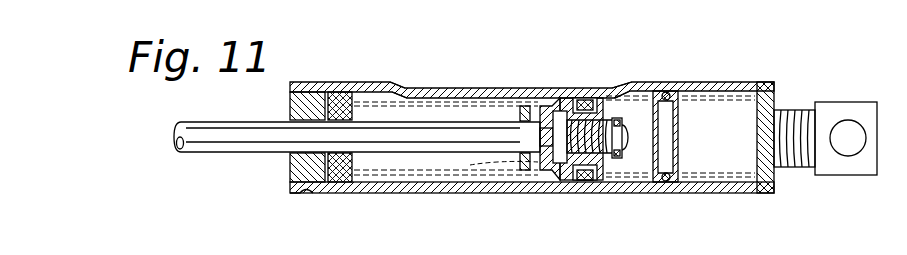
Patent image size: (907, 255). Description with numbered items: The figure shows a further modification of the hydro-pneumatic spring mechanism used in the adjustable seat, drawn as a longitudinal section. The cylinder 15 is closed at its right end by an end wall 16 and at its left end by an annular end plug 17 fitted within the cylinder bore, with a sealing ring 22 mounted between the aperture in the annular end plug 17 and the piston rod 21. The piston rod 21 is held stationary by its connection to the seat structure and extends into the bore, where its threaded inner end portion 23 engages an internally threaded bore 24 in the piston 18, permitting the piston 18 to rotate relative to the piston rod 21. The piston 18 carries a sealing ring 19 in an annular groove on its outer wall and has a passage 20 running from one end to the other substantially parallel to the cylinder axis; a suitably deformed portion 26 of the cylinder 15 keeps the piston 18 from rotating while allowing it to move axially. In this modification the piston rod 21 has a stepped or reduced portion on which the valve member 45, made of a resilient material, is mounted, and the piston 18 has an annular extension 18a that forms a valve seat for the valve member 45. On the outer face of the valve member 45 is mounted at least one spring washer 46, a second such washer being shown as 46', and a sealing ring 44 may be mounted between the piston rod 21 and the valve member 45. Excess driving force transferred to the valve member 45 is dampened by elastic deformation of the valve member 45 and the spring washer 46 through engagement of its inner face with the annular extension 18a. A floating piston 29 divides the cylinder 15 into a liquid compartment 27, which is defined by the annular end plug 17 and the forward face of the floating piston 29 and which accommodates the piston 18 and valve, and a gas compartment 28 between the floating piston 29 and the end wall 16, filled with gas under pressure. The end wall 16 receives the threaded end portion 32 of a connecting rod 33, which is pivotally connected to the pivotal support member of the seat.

The cylinder 15 is at (388, 194).
The end wall 16 is at (778, 178).
The annular end plug 17 is at (292, 180).
The piston 18 is at (606, 158).
The annular extension 18a is at (582, 98).
The sealing ring 19 is at (580, 184).
The passage 20 is at (630, 92).
The piston rod 21 is at (222, 154).
The sealing ring 22 is at (340, 194).
The inner end portion 23 is at (614, 160).
The internally threaded bore 24 is at (568, 160).
The deformed portion 26 is at (424, 90).
The liquid compartment 27 is at (495, 165).
The gas compartment 28 is at (733, 151).
The floating piston 29 is at (660, 185).
The threaded end portion 32 is at (795, 110).
The connecting rod 33 is at (846, 103).
The sealing ring 44 is at (546, 170).
The valve member 45 is at (560, 111).
The spring washer 46 is at (471, 199).
The seal ring 46' is at (528, 86).